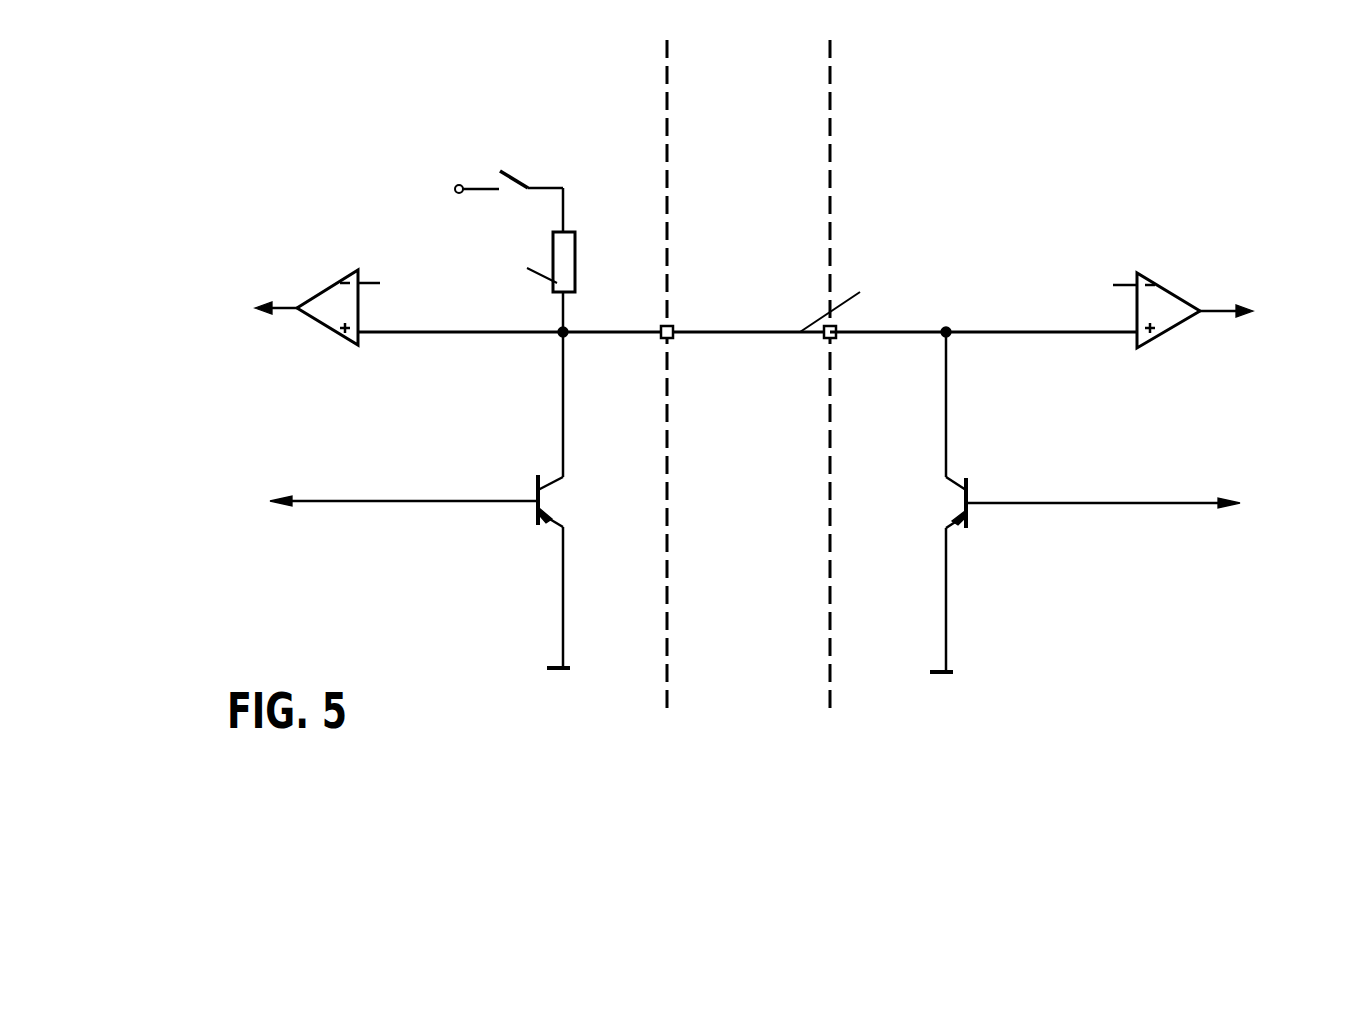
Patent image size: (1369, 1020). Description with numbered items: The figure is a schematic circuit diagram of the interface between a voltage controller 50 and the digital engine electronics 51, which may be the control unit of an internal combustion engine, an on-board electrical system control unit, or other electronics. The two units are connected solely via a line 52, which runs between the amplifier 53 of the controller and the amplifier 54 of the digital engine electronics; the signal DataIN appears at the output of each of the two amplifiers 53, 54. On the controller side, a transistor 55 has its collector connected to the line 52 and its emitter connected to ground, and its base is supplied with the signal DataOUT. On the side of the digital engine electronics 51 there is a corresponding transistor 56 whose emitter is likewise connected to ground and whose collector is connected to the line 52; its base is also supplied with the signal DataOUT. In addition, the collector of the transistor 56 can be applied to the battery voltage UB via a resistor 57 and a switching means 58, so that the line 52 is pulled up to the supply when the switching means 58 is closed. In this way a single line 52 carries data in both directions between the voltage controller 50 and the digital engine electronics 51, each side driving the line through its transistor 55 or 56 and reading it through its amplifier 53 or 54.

The voltage controller 50 is at (1050, 196).
The digital engine electronics 51 is at (292, 192).
The line 52 is at (740, 332).
The amplifier 53 is at (1168, 330).
The amplifier 54 is at (322, 326).
The transistor 55 is at (955, 499).
The transistor 56 is at (550, 502).
The resistor 57 is at (578, 265).
The switching means 58 is at (517, 176).